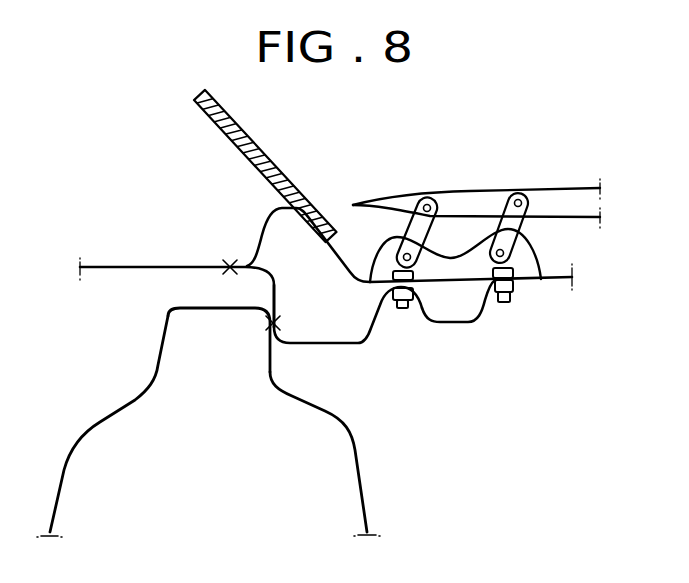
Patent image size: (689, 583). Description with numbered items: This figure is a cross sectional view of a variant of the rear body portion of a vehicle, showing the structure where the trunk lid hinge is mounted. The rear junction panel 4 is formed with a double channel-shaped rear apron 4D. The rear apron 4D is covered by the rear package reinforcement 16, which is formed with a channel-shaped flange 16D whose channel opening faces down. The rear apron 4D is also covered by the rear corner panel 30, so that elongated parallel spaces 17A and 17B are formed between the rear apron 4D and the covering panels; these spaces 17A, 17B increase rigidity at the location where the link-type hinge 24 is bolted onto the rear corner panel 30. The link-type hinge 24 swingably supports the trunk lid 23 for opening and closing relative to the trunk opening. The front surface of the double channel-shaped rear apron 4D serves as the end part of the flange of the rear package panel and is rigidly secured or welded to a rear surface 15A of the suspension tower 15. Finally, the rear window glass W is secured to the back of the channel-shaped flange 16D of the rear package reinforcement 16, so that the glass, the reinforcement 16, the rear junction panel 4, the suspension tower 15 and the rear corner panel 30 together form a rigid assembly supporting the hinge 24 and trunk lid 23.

The rear junction panel 4 is at (287, 309).
The rear apron 4D is at (384, 335).
The suspension tower 15 is at (208, 422).
The rear surface 15A is at (272, 345).
The rear package reinforcement 16 is at (281, 231).
The channel-shaped flange 16D is at (263, 221).
The elongated parallel space 17A is at (341, 309).
The elongated parallel space 17B is at (447, 295).
The trunk lid 23 is at (460, 200).
The link-type hinge 24 is at (530, 235).
The rear corner panel 30 is at (557, 283).
The rear window glass W is at (281, 167).